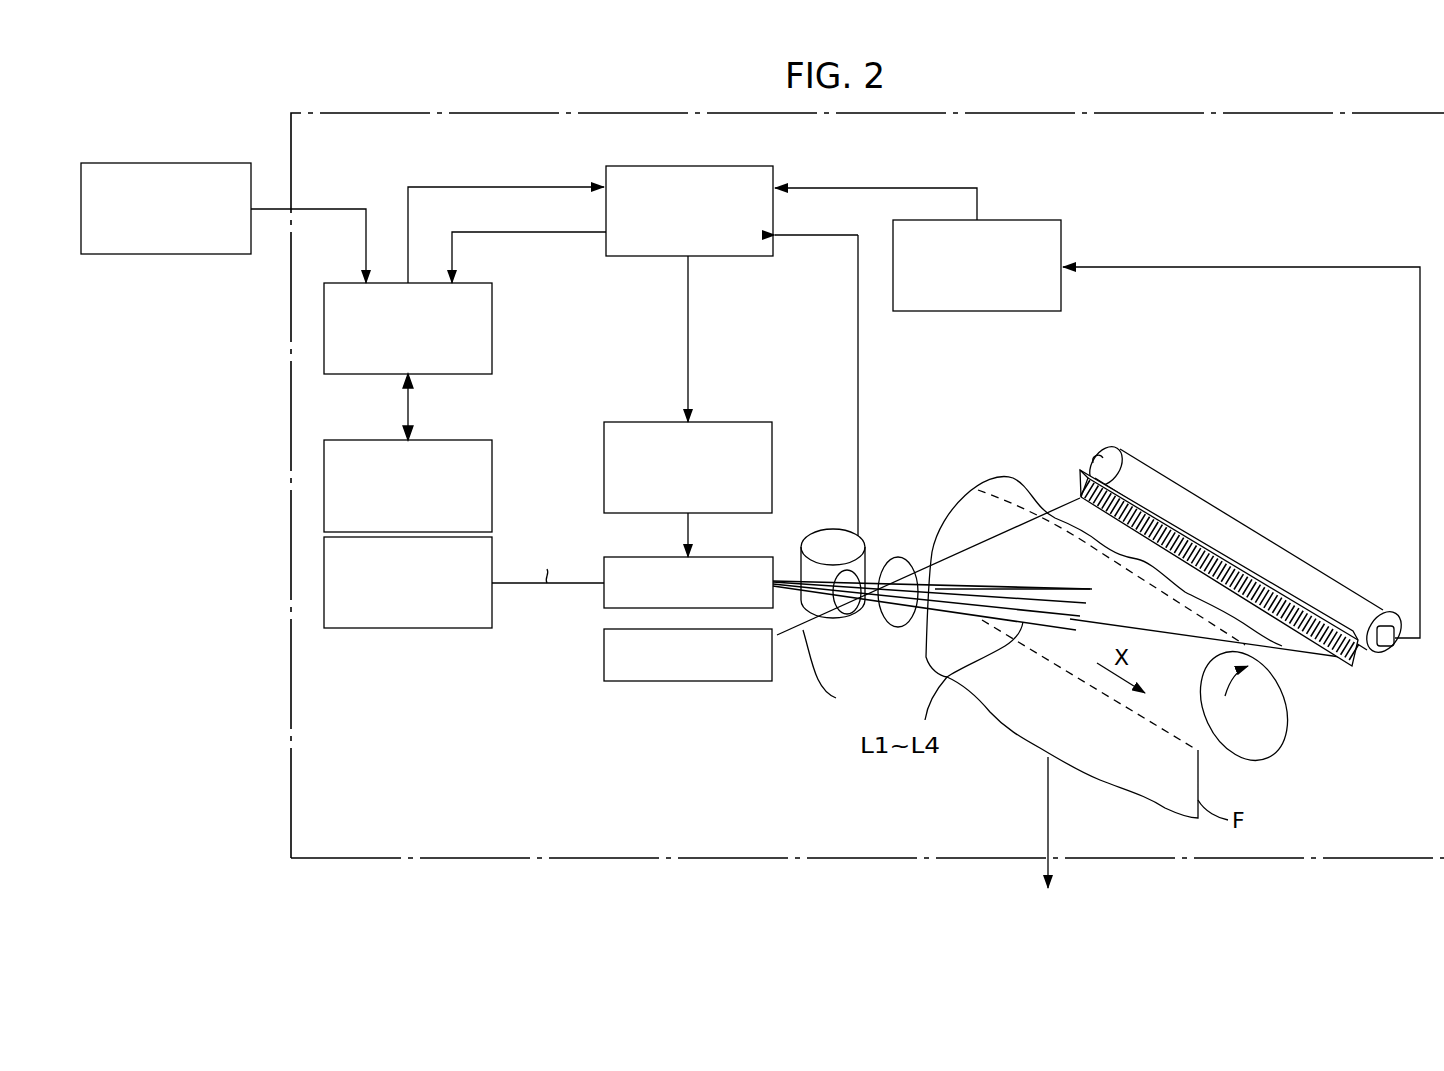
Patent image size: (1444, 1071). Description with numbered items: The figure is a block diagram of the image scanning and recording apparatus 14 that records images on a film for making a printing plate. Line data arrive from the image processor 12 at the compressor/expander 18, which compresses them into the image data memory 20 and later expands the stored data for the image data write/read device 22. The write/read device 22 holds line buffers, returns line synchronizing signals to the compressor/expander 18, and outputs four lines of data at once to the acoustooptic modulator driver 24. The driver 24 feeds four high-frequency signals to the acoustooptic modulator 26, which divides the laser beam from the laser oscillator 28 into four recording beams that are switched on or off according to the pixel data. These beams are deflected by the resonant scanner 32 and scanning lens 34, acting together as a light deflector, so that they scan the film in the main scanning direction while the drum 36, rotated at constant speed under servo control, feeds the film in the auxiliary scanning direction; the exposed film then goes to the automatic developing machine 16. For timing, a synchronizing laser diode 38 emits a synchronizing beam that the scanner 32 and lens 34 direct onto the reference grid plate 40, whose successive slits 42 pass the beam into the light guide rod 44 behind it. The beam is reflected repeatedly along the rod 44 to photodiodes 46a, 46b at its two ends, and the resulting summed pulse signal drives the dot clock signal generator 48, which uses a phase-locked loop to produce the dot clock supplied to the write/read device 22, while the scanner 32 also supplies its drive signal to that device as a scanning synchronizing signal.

The image processor 12 is at (224, 163).
The image scanning and recording apparatus 14 is at (338, 857).
The automatic developing machine 16 is at (1036, 836).
The compressor/expander 18 is at (478, 283).
The image data memory 20 is at (456, 440).
The image data write/read device 22 is at (738, 166).
The acoustooptic modulator driver 24 is at (738, 422).
The acoustooptic modulator 26 is at (738, 557).
The laser oscillator 28 is at (360, 629).
The resonant scanner 32 is at (830, 540).
The scanning lens 34 is at (893, 557).
The drum 36 is at (1262, 718).
The synchronizing laser diode 38 is at (640, 682).
The reference grid plate 40 is at (1240, 596).
The slits 42 is at (1250, 577).
The light guide rod 44 is at (1207, 512).
The photodiode 46a is at (1398, 627).
The photodiode 46b is at (1090, 460).
The dot clock signal generator 48 is at (1026, 220).